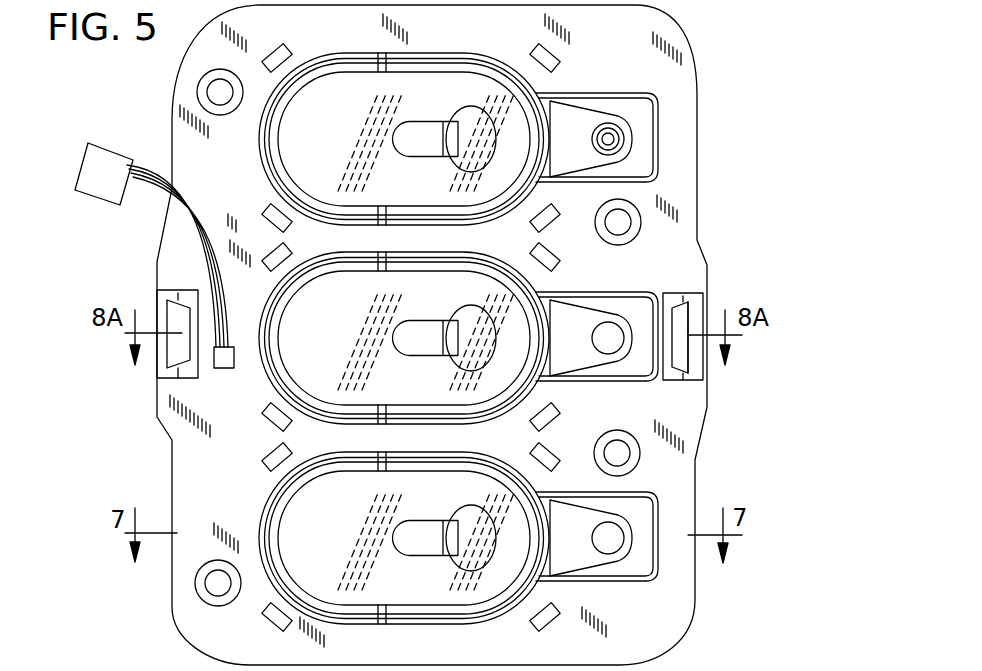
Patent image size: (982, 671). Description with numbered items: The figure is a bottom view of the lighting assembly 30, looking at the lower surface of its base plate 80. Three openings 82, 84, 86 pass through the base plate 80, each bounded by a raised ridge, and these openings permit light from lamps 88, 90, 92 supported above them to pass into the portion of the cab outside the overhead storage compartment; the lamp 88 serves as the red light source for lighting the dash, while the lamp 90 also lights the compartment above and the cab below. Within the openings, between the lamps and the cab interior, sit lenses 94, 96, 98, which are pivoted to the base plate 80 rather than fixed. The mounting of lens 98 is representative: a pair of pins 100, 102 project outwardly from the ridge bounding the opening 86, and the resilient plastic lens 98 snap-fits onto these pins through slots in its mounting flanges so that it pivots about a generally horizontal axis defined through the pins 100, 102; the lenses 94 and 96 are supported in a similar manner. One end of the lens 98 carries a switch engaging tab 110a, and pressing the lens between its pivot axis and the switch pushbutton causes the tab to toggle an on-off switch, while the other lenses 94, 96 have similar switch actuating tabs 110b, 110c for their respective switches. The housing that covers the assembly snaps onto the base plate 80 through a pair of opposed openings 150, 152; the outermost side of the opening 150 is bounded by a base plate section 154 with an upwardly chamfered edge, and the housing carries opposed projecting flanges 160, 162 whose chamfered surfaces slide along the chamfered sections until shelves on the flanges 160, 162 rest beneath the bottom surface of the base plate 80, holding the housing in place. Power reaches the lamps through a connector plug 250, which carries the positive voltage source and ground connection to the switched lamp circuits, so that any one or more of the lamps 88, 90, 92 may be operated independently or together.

The lighting assembly 30 is at (419, 335).
The base plate 80 is at (660, 607).
The opening 82 is at (437, 60).
The opening 84 is at (437, 262).
The opening 86 is at (437, 460).
The lamp 88 is at (392, 142).
The lamp 90 is at (392, 341).
The lamp 92 is at (392, 549).
The lens 94 is at (300, 162).
The lens 96 is at (297, 360).
The lens 98 is at (293, 514).
The pin 100 is at (383, 617).
The pin 102 is at (383, 463).
The switch engaging tab 110a is at (573, 527).
The switch actuating tab 110b is at (575, 325).
The switch actuating tab 110c is at (580, 118).
The opening 150 is at (675, 377).
The opening 152 is at (188, 373).
The base plate section 154 is at (702, 358).
The projecting flange 160 is at (688, 312).
The projecting flange 162 is at (175, 312).
The connector plug 250 is at (110, 165).